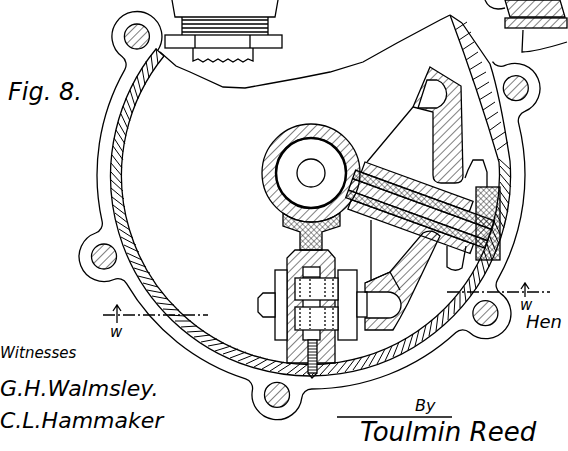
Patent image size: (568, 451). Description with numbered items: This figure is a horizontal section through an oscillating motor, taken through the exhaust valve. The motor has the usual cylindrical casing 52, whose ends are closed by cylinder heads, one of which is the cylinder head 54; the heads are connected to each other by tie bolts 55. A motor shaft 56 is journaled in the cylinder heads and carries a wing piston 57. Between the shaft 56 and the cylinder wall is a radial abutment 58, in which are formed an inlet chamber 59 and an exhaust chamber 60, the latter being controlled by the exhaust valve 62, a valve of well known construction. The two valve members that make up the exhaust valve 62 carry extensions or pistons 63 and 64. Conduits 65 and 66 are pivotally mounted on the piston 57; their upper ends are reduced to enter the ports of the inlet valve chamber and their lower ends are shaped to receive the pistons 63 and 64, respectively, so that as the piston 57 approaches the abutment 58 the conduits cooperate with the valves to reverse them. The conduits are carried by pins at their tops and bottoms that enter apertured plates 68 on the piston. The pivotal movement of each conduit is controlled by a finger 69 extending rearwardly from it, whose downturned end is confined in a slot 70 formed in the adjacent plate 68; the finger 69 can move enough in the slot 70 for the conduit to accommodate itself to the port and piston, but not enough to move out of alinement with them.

The cylindrical casing 52 is at (110, 135).
The cylinder head 54 is at (128, 188).
The tie bolts 55 is at (526, 99).
The motor shaft 56 is at (263, 156).
The wing piston 57 is at (400, 174).
The radial abutment 58 is at (296, 250).
The inlet chamber 59 is at (525, 26).
The exhaust chamber 60 is at (289, 259).
The exhaust valve 62 is at (275, 283).
The extension or piston 63 is at (368, 272).
The extension or piston 64 is at (258, 307).
The conduit 65 is at (394, 321).
The conduit 66 is at (418, 93).
The apertured plates 68 is at (413, 128).
The finger 69 is at (418, 277).
The slot 70 is at (468, 162).